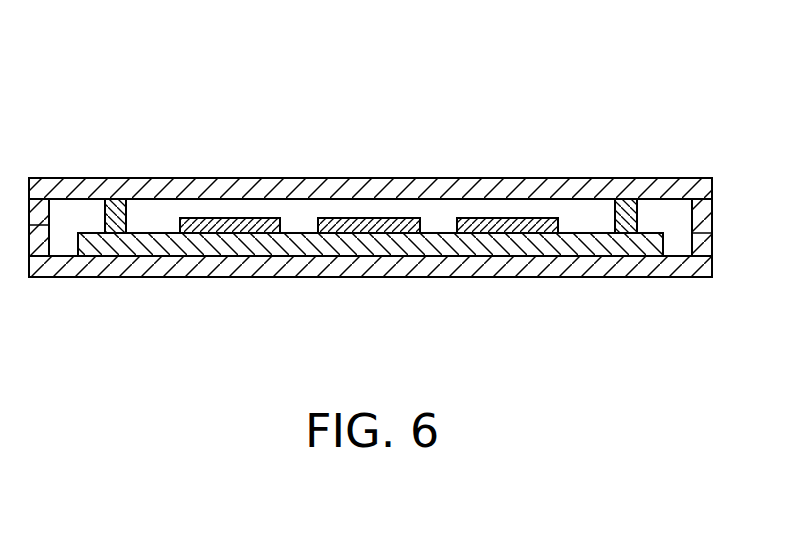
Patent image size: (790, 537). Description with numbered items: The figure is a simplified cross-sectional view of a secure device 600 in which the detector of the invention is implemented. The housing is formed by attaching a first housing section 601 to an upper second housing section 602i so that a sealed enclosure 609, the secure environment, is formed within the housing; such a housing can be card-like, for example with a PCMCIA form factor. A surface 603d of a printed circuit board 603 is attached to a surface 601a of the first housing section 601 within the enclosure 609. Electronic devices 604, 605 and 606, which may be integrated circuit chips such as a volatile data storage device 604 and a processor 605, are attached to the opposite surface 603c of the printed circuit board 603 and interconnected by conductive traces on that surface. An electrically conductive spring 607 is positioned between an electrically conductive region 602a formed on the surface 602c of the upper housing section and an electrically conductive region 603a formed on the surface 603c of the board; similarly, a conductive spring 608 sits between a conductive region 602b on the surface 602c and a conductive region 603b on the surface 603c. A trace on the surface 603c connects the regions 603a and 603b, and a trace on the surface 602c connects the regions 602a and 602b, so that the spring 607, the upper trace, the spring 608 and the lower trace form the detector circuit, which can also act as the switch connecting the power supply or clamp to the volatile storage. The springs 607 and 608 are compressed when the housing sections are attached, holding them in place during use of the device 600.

The secure device 600 is at (358, 76).
The first housing section 601 is at (370, 265).
The surface of the first housing section 601a is at (677, 257).
The electrically conductive region 602a is at (113, 199).
The electrically conductive region 602b is at (623, 199).
The surface of the second housing section 602c is at (321, 200).
The cap (lid) member 602i is at (267, 185).
The printed circuit board 603 is at (461, 246).
The electrically conductive region 603a is at (118, 236).
The electrically conductive region 603b is at (622, 237).
The surface of the printed circuit board 603c is at (153, 232).
The surface of the printed circuit board 603d is at (557, 250).
The electronic device 604 is at (208, 218).
The electronic device 605 is at (387, 218).
The electronic device 606 is at (507, 219).
The electrically conductive spring 607 is at (104, 217).
The electrically conductive spring 608 is at (637, 218).
The sealed enclosure 609 is at (672, 225).